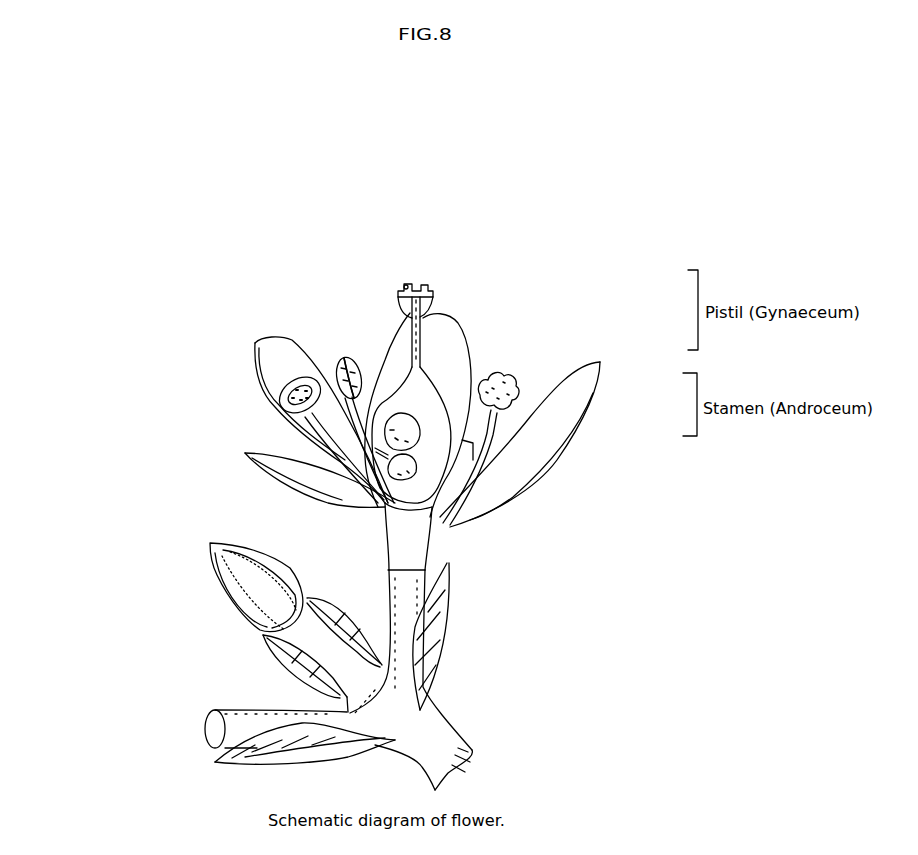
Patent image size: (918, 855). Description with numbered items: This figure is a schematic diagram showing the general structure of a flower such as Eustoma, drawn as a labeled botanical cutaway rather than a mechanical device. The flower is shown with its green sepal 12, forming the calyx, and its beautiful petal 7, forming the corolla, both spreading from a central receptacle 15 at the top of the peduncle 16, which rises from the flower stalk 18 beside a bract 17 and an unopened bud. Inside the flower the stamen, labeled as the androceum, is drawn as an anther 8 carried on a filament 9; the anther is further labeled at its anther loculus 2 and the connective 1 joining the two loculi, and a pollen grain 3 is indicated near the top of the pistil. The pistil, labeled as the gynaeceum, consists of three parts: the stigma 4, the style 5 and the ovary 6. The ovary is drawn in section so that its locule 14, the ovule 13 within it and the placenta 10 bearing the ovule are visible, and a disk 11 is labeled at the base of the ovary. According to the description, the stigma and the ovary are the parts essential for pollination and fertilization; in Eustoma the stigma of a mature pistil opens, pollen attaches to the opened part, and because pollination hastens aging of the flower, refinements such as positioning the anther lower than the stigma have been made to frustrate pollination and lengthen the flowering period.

The connective 1 is at (347, 352).
The anther loculus 2 is at (372, 360).
The pollen grain 3 is at (428, 287).
The stigma 4 is at (428, 293).
The style 5 is at (421, 330).
The ovary 6 is at (428, 380).
The petal (corolla) 7 is at (275, 350).
The anther 8 is at (518, 387).
The filament 9 is at (488, 428).
The placenta 10 is at (375, 448).
The disk 11 is at (458, 465).
The sepal (calyx) 12 is at (277, 488).
The ovule 13 is at (418, 440).
The locule 14 is at (415, 473).
The receptacle 15 is at (408, 538).
The peduncle (pedicel) 16 is at (407, 603).
The bract (bractlet) 17 is at (437, 637).
The flower stalk 18 is at (440, 758).